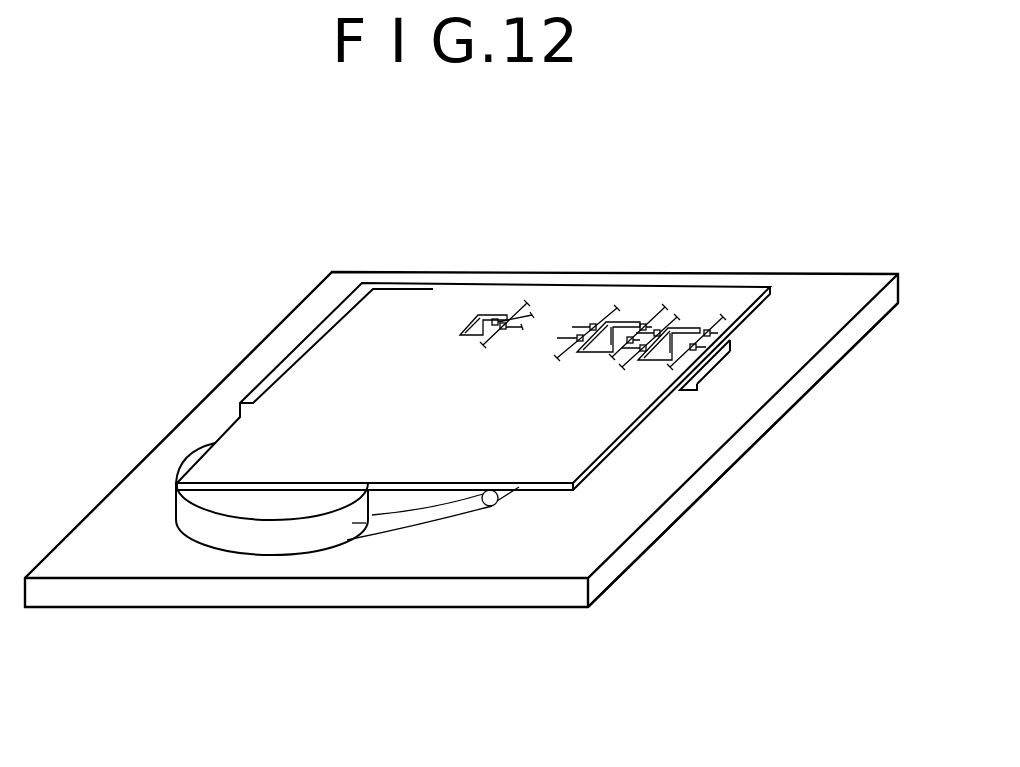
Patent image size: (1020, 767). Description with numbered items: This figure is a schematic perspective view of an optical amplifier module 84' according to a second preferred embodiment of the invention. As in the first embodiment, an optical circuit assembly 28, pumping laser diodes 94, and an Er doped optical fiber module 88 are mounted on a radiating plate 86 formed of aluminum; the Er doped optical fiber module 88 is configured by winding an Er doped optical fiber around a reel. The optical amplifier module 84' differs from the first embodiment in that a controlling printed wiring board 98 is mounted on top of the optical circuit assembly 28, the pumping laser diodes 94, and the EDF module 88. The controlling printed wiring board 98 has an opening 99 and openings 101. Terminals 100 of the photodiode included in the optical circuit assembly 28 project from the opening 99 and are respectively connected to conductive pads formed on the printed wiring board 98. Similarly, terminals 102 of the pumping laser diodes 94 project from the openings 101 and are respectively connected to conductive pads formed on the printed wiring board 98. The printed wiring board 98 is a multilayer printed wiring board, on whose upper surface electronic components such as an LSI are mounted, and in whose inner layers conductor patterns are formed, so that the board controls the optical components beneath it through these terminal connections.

The optical circuit assembly 28 is at (320, 335).
The optical amplifier module 84' is at (461, 401).
The radiating plate 86 is at (838, 353).
The Er doped optical fiber module 88 is at (250, 500).
The pumping laser diodes 94 is at (713, 377).
The controlling printed wiring board 98 is at (395, 312).
The opening 99 is at (475, 315).
The terminals 100 is at (493, 317).
The openings 101 is at (687, 326).
The terminals 102 is at (665, 365).